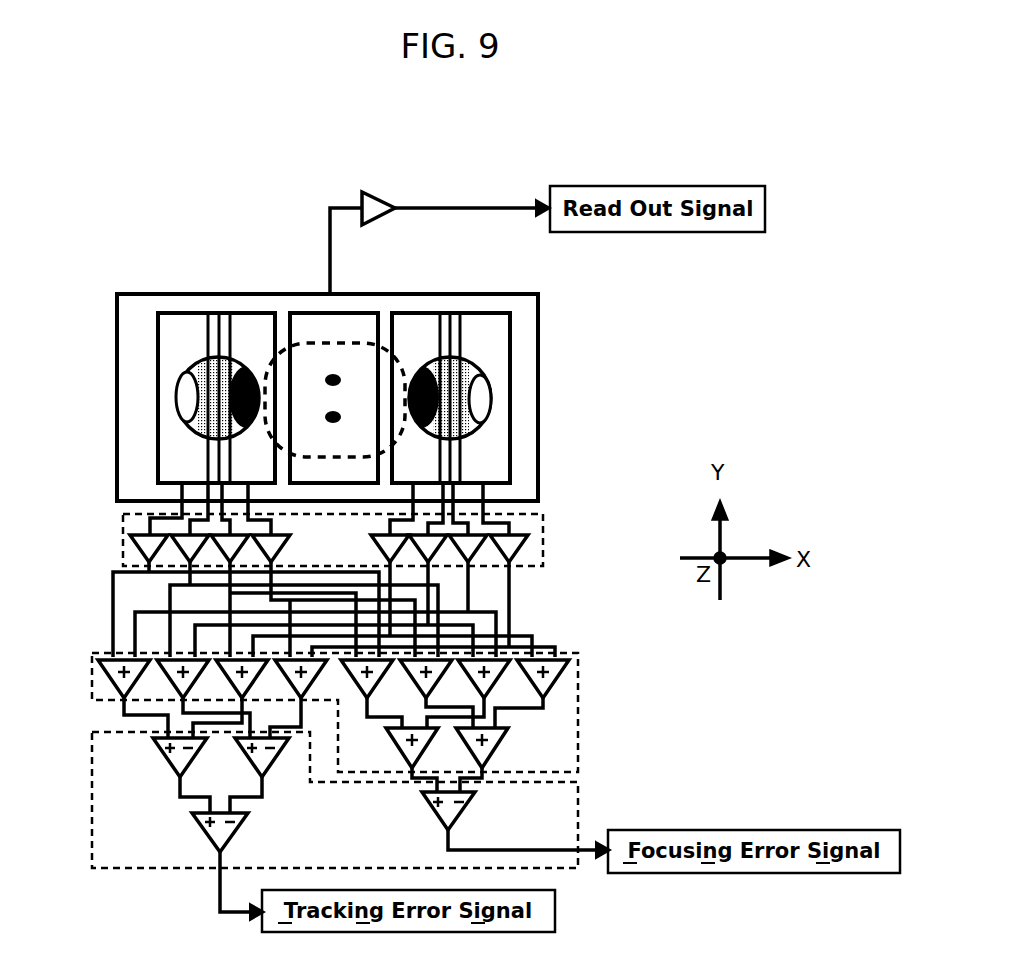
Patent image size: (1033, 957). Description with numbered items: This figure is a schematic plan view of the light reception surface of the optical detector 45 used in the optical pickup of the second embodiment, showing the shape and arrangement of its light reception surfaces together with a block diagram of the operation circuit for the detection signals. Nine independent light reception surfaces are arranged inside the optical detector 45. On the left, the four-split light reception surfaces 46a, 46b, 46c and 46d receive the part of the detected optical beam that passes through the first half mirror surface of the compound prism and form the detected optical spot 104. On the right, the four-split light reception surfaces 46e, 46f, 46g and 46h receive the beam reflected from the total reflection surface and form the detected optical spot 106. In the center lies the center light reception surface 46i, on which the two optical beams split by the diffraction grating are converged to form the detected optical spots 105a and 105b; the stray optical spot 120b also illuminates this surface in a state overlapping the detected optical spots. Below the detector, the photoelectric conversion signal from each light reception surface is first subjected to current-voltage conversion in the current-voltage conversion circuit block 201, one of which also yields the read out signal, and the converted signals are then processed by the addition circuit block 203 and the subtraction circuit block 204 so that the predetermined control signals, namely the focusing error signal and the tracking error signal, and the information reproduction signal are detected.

The optical detector 45 is at (540, 386).
The light reception surface 46a is at (162, 383).
The light reception surface 46b is at (253, 330).
The light reception surface 46c is at (181, 313).
The light reception surface 46d is at (205, 323).
The light reception surface 46e is at (420, 330).
The light reception surface 46f is at (497, 467).
The light reception surface 46g is at (447, 313).
The light reception surface 46h is at (460, 318).
The center light reception surface 46i is at (313, 330).
The detected optical spot 104 is at (187, 408).
The detected optical spot 105a is at (333, 380).
The detected optical spot 105b is at (333, 417).
The detected optical spot 106 is at (482, 404).
The stray optical spot 120b is at (407, 347).
The current-voltage conversion circuit block 201 is at (380, 193).
The addition circuit block 203 is at (578, 672).
The subtraction circuit block 204 is at (578, 796).